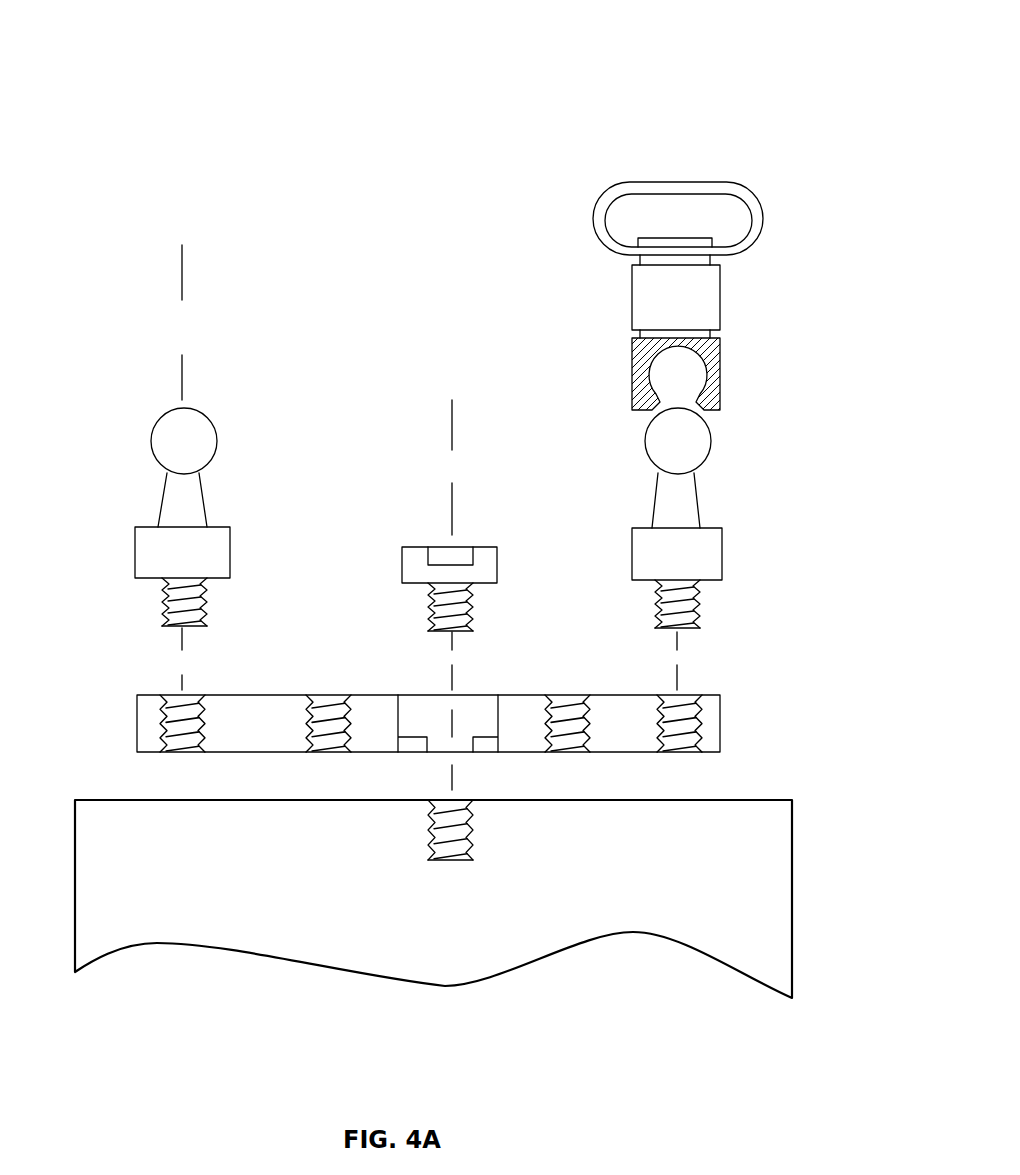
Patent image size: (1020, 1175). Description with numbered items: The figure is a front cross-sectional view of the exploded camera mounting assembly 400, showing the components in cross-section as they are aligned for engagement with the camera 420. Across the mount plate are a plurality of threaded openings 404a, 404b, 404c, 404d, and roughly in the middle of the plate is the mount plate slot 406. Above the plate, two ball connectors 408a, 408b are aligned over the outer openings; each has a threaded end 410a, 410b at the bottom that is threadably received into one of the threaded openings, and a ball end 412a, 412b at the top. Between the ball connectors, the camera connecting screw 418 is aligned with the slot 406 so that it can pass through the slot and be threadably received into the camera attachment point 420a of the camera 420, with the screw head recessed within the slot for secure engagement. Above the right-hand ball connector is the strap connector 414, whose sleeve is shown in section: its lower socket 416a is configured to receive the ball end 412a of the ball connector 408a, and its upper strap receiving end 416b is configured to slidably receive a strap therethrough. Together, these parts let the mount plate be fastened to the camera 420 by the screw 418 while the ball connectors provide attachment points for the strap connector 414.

The attachment system 400 is at (201, 78).
The threaded opening 404a is at (690, 715).
The threaded opening 404b is at (188, 722).
The threaded opening 404c is at (565, 722).
The threaded opening 404d is at (330, 712).
The mount plate slot 406 is at (470, 712).
The ball connector 408a is at (743, 526).
The ball connector 408b is at (236, 502).
The threaded end 410a is at (707, 607).
The threaded end 410b is at (153, 605).
The ball end 412a is at (720, 446).
The ball end 412b is at (213, 418).
The strap connector 414 is at (565, 295).
The socket 416a is at (698, 376).
The strap receiving end 416b is at (718, 180).
The camera connecting screw 418 is at (458, 547).
The camera 420 is at (447, 1002).
The camera attachment point 420a is at (448, 838).